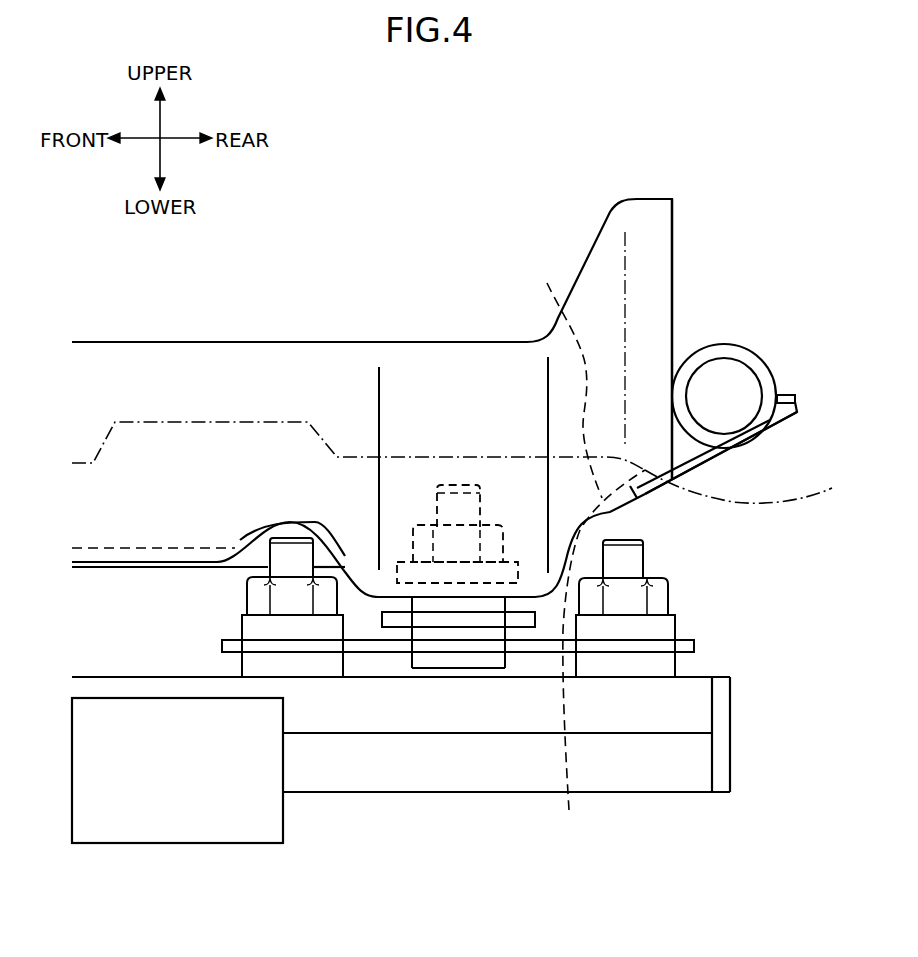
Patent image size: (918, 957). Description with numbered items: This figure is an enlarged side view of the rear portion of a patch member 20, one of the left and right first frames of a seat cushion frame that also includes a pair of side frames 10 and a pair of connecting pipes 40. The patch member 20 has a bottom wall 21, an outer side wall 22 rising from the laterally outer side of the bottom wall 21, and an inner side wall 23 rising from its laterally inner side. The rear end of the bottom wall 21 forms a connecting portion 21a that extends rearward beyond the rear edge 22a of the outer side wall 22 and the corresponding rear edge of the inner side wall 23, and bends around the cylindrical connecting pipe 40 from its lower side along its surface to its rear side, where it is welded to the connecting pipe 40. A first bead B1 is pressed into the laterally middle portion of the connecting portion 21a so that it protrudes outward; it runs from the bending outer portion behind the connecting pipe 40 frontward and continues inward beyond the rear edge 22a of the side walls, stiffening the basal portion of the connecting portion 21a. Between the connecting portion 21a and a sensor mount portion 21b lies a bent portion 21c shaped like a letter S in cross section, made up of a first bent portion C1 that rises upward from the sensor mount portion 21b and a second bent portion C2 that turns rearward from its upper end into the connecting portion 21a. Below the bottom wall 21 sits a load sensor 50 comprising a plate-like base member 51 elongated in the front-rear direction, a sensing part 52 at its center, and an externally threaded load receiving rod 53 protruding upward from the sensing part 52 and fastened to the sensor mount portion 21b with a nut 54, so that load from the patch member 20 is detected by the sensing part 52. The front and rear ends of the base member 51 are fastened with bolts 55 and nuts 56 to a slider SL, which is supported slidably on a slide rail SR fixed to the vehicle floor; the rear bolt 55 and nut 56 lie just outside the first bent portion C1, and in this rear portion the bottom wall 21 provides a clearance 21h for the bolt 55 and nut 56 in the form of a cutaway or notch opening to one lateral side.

The side frame 10 is at (775, 503).
The patch member 20 is at (323, 342).
The bottom wall 21 is at (462, 615).
The connecting portion 21a is at (782, 400).
The sensor mount portion 21b is at (537, 600).
The bent portion 21c is at (608, 512).
The clearance 21h is at (320, 540).
The outer side wall 22 is at (193, 380).
The rear edge of outer side wall 22a is at (673, 247).
The inner side wall 23 is at (260, 540).
The connecting pipe 40 is at (743, 352).
The load sensor 50 is at (501, 718).
The base member 51 is at (390, 652).
The sensing part 52 is at (468, 627).
The load receiving rod 53 is at (457, 492).
The nut 54 is at (421, 520).
The bolt 55 is at (290, 548).
The nut 56 is at (257, 595).
The first bead B1 is at (777, 448).
The first bent portion C1 is at (604, 654).
The second bent portion C2 is at (562, 378).
The slider SL is at (362, 782).
The slide rail SR is at (197, 828).